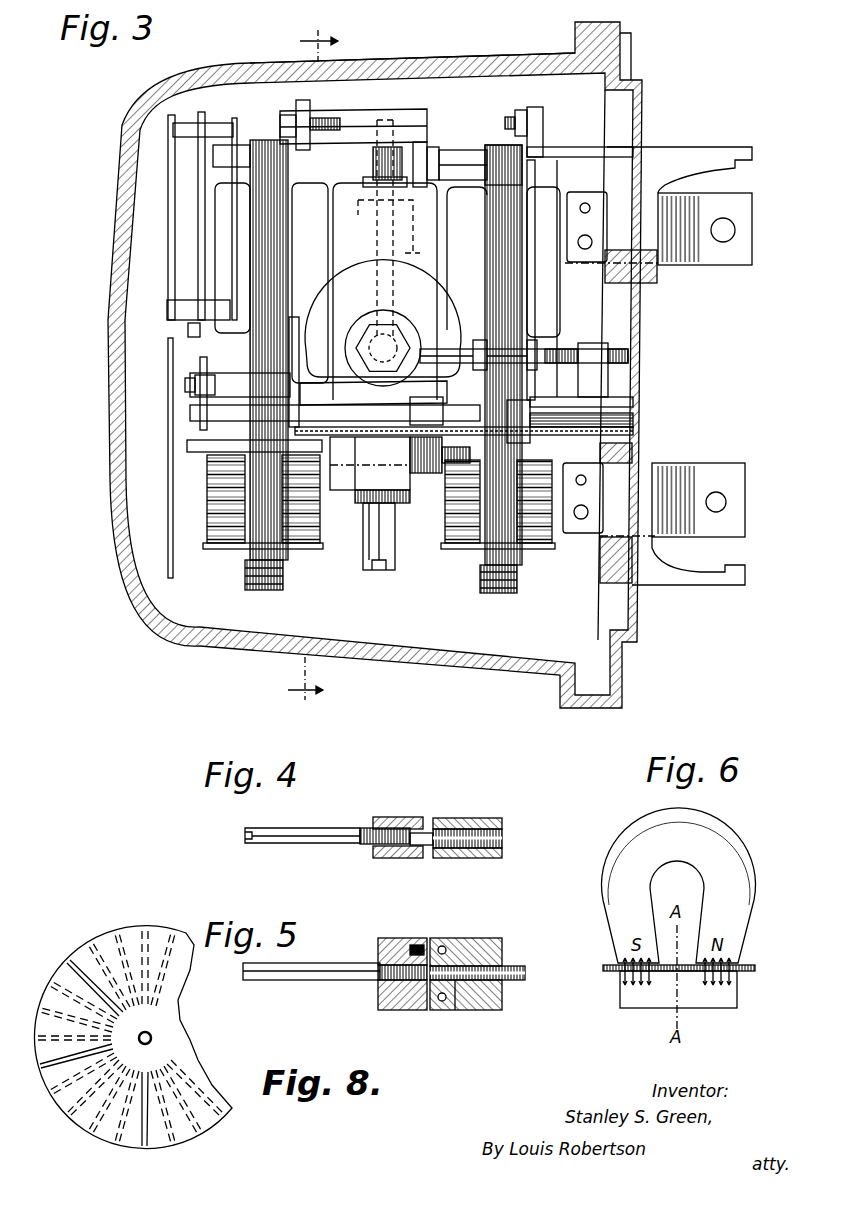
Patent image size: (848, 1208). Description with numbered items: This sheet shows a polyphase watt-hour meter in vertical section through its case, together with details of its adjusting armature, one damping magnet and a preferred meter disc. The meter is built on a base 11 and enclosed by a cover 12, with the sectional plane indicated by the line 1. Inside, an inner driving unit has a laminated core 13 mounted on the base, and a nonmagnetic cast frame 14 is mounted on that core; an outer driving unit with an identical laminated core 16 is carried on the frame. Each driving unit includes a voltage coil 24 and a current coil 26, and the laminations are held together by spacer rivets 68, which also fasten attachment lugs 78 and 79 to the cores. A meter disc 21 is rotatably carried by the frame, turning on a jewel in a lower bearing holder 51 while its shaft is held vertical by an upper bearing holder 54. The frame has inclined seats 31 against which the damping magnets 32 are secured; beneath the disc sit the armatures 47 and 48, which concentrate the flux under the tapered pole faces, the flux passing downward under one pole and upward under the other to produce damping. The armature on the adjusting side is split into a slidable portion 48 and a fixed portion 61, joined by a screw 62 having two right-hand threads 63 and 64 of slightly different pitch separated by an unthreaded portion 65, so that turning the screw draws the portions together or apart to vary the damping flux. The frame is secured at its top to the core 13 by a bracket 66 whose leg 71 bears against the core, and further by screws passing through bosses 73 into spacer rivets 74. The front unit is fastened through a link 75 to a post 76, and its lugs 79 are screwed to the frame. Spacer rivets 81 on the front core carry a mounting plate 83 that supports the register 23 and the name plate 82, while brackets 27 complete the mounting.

In FIG. 3, the section line 1 is at (304, 365).
In FIG. 3, the meter base 11 is at (645, 102).
In FIG. 3, the cover 12 is at (413, 60).
In FIG. 3, the laminated core 13 is at (518, 585).
In FIG. 3, the frame 14 is at (352, 188).
In FIG. 3, the laminated core 16 is at (283, 579).
In FIG. 3, the meter disc 21 is at (545, 438).
In FIG. 6, the meter disc 21 is at (748, 963).
In FIG. 3, the register 23 is at (170, 309).
In FIG. 3, the voltage coil 24 is at (308, 188).
In FIG. 3, the current coil 26 is at (210, 492).
In FIG. 3, the mounting bracket 27 is at (549, 197).
In FIG. 3, the inclined seats 31 is at (375, 330).
In FIG. 3, the damping magnets 32 is at (372, 282).
In FIG. 6, the damping magnets 32 is at (757, 878).
In FIG. 6, the armature 47 is at (739, 991).
In FIG. 3, the armature portion 48 is at (355, 472).
In FIG. 4, the armature portion 48 is at (393, 817).
In FIG. 5, the armature portion 48 is at (401, 938).
In FIG. 3, the lower bearing holder 51 is at (395, 541).
In FIG. 3, the bearing holder 54 is at (388, 147).
In FIG. 3, the armature portion 61 is at (425, 473).
In FIG. 4, the armature portion 61 is at (466, 818).
In FIG. 5, the armature portion 61 is at (474, 940).
In FIG. 4, the screw 62 is at (314, 826).
In FIG. 5, the screw 62 is at (311, 963).
In FIG. 4, the thread 63 is at (393, 858).
In FIG. 5, the thread 63 is at (406, 1010).
In FIG. 4, the thread 64 is at (482, 858).
In FIG. 5, the thread 64 is at (520, 966).
In FIG. 4, the unthreaded portion 65 is at (420, 858).
In FIG. 5, the unthreaded portion 65 is at (456, 1010).
In FIG. 3, the bracket 66 is at (440, 147).
In FIG. 3, the spacer rivets 68 is at (472, 157).
In FIG. 3, the leg 71 is at (457, 150).
In FIG. 3, the bosses 73 is at (428, 395).
In FIG. 3, the spacer rivets 74 is at (462, 383).
In FIG. 3, the link 75 is at (302, 105).
In FIG. 3, the post 76 is at (342, 113).
In FIG. 3, the attachment lug 78 is at (290, 126).
In FIG. 3, the attachment lugs 79 is at (294, 362).
In FIG. 3, the spacer rivets 81 is at (233, 372).
In FIG. 3, the name plate 82 is at (168, 471).
In FIG. 3, the mounting plate 83 is at (195, 386).